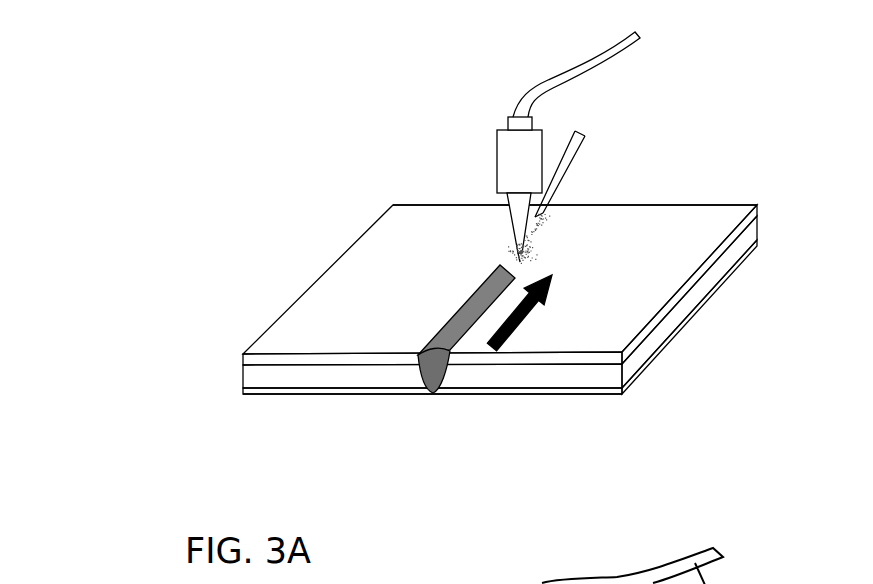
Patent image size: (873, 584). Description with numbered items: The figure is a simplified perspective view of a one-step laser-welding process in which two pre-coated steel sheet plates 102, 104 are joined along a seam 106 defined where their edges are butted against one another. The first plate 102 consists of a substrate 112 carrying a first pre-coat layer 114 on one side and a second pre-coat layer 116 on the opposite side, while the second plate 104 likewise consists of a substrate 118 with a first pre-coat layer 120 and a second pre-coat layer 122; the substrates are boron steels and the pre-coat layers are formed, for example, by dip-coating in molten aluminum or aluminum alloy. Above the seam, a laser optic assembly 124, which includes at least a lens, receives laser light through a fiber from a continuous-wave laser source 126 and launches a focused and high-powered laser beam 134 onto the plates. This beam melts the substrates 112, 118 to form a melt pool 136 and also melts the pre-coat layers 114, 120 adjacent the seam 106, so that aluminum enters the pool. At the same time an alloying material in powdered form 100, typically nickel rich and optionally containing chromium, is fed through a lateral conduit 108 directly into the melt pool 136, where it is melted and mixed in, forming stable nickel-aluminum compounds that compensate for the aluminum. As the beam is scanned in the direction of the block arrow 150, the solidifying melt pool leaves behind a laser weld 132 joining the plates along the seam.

The alloying material in powdered form 100 is at (530, 240).
The pre-coated steel sheet plate 102 is at (383, 245).
The pre-coated steel sheet plate 104 is at (663, 215).
The seam 106 is at (547, 220).
The lateral conduit 108 is at (575, 155).
The substrate 112 is at (318, 375).
The first pre-coat layer 114 is at (275, 358).
The second pre-coat layer 116 is at (273, 392).
The substrate 118 is at (640, 350).
The first pre-coat layer 120 is at (697, 278).
The second pre-coat layer 122 is at (548, 392).
The laser optic assembly 124 is at (520, 165).
The laser source 126 is at (537, 92).
The laser weld 132 is at (470, 307).
The focused and high-powered laser beam 134 is at (513, 208).
The melt pool 136 is at (510, 260).
The block arrow 150 is at (530, 300).